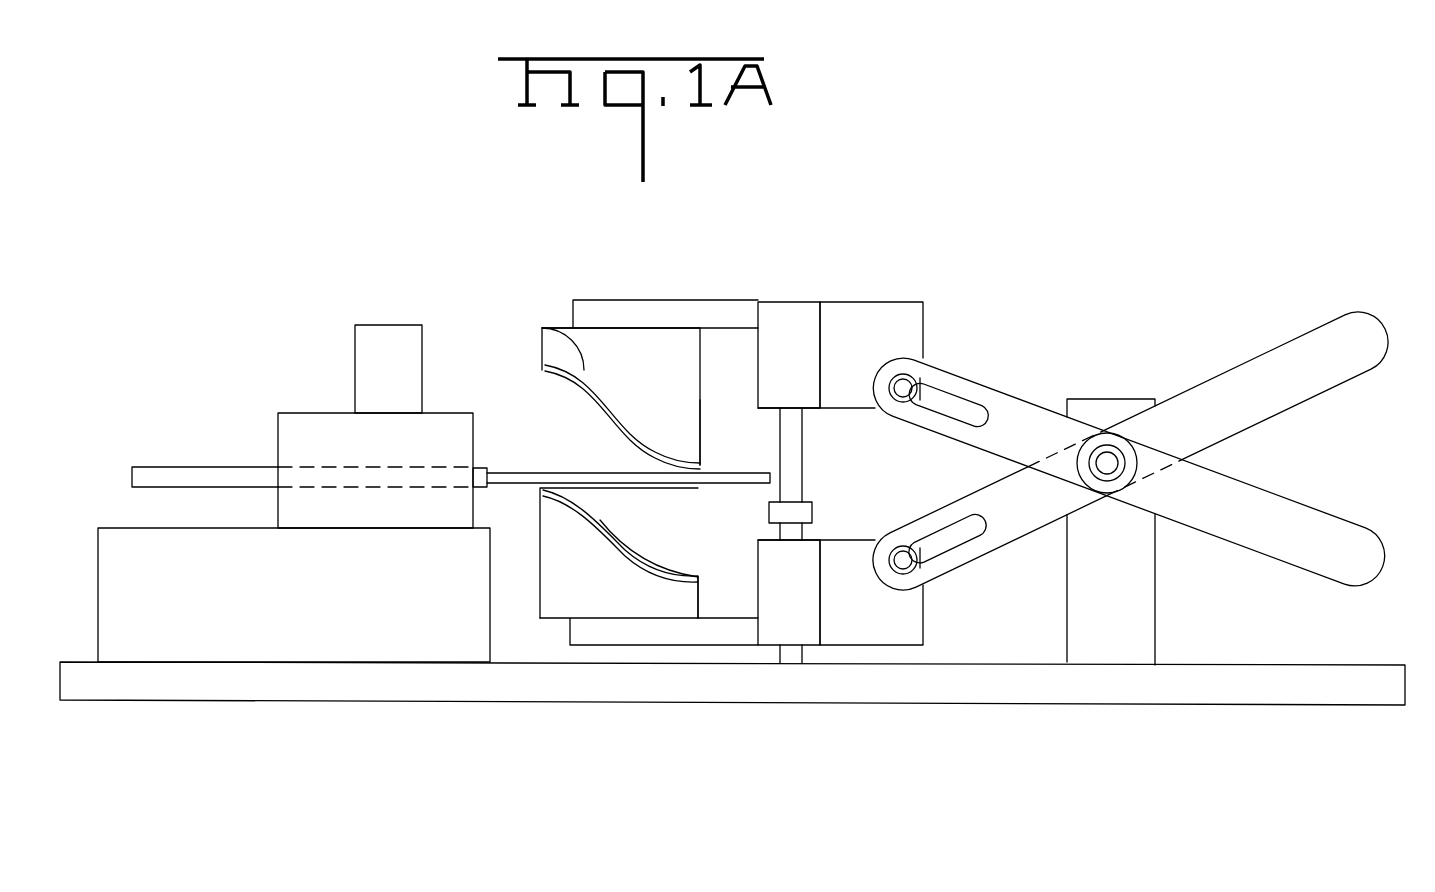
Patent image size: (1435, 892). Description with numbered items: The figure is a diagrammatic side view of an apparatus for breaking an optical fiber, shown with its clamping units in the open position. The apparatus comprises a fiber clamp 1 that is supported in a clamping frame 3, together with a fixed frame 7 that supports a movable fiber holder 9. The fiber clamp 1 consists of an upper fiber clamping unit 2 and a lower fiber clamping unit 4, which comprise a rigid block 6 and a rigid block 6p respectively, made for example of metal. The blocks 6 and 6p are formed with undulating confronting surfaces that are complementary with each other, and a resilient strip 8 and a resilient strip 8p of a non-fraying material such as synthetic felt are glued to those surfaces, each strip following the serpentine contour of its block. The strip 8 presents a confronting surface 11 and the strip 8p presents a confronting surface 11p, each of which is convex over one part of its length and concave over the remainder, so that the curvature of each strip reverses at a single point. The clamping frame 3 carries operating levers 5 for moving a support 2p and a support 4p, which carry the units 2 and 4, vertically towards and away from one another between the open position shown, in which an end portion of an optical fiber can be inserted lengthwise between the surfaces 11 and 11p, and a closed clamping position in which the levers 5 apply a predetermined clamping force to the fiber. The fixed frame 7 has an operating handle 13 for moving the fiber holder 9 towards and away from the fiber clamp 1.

The fiber clamp 1 is at (513, 302).
The fiber clamping unit 2 is at (655, 375).
The support 2p is at (851, 292).
The clamping frame 3 is at (1073, 410).
The fiber clamping unit 4 is at (600, 600).
The support 4p is at (845, 525).
The operating levers 5 is at (1293, 357).
The rigid block 6 is at (673, 413).
The rigid block 6p is at (678, 600).
The fixed frame 7 is at (315, 623).
The resilient strip 8 is at (542, 330).
The resilient strip 8p is at (632, 560).
The movable fiber holder 9 is at (490, 451).
The confronting surface 11 is at (602, 397).
The confronting surface 11p is at (657, 492).
The operating handle 13 is at (385, 368).